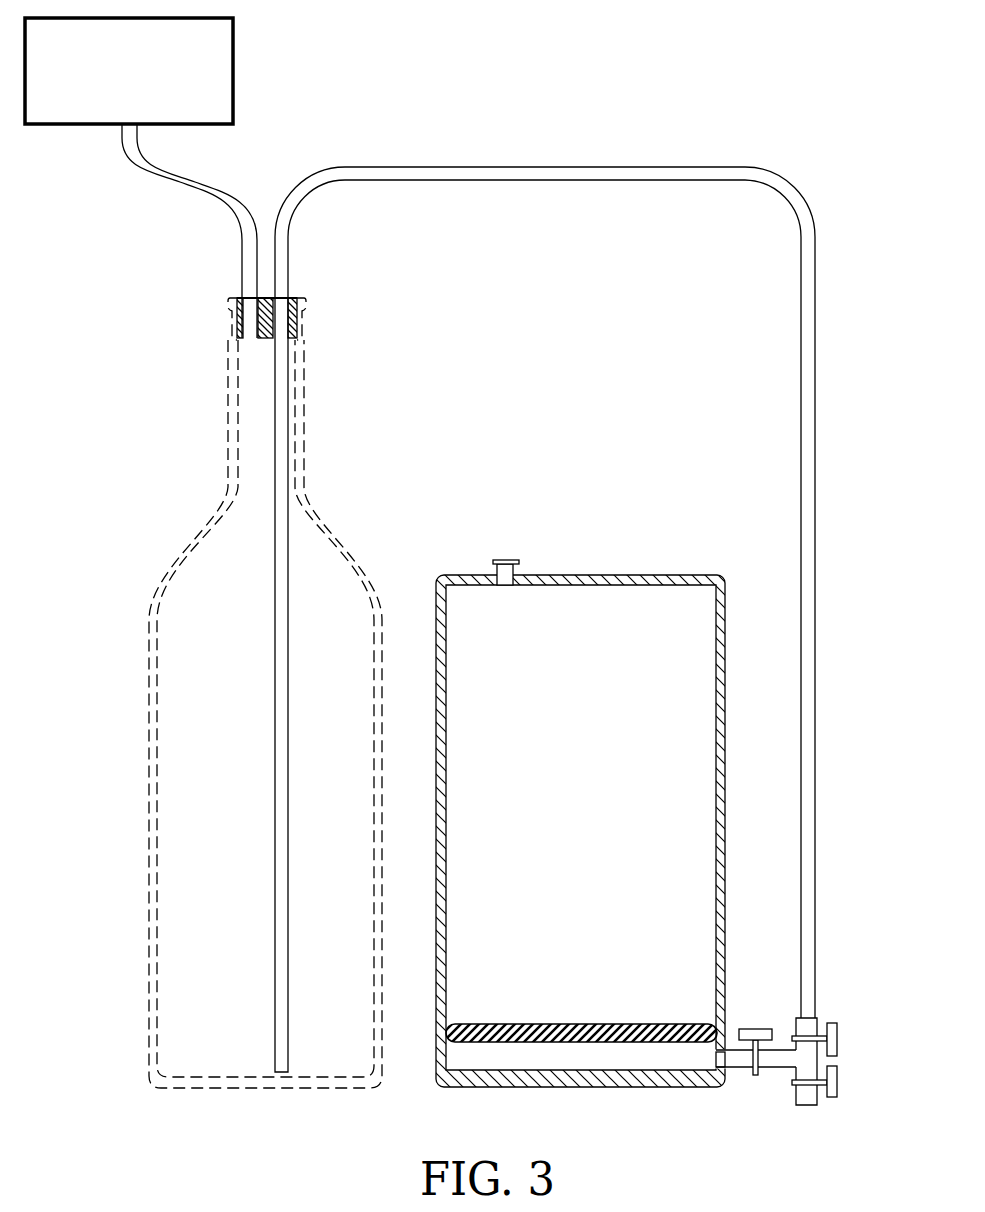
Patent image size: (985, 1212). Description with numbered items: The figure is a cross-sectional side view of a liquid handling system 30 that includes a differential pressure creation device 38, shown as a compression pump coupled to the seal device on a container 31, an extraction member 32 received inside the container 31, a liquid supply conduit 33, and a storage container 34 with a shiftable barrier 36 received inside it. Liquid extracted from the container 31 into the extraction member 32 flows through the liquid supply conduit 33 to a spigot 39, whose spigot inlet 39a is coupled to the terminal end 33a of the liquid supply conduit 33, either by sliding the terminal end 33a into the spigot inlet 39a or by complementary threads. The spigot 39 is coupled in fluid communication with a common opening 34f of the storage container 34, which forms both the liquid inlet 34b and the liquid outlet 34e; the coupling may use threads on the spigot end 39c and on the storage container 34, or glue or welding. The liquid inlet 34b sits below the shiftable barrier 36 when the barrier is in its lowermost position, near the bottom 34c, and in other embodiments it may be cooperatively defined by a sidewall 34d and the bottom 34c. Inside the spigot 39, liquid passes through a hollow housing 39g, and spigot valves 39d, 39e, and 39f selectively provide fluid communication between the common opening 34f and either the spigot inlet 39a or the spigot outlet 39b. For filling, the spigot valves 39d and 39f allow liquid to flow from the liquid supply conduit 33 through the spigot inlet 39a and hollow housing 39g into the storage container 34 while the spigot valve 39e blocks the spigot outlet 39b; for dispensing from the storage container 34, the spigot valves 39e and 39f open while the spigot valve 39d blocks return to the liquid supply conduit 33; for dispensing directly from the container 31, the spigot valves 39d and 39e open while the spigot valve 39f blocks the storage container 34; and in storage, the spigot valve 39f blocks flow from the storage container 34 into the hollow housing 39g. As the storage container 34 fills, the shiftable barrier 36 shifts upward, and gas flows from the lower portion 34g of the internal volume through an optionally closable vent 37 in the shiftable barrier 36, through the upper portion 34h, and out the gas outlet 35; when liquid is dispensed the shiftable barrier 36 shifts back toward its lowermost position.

The liquid handling system 30 is at (824, 136).
The container 31 is at (152, 633).
The extraction member 32 is at (273, 838).
The liquid supply conduit 33 is at (525, 170).
The terminal end 33a is at (798, 1015).
The storage container 34 is at (727, 636).
The liquid inlet 34b is at (703, 1071).
The bottom 34c is at (566, 1088).
The sidewall 34d is at (712, 800).
The liquid outlet 34e is at (713, 1061).
The common opening 34f is at (716, 1049).
The lower portion 34g is at (465, 1058).
The upper portion 34h is at (450, 980).
The gas outlet 35 is at (505, 558).
The shiftable barrier 36 is at (517, 1036).
The vent 37 is at (580, 1040).
The differential pressure creation device 38 is at (279, 134).
The spigot 39 is at (767, 1072).
The spigot inlet 39a is at (815, 1017).
The spigot outlet 39b is at (806, 1105).
The spigot end 39c is at (713, 1074).
The spigot valve 39d is at (838, 1038).
The spigot valve 39e is at (838, 1082).
The spigot valve 39f is at (757, 1028).
The hollow housing 39g is at (787, 1070).